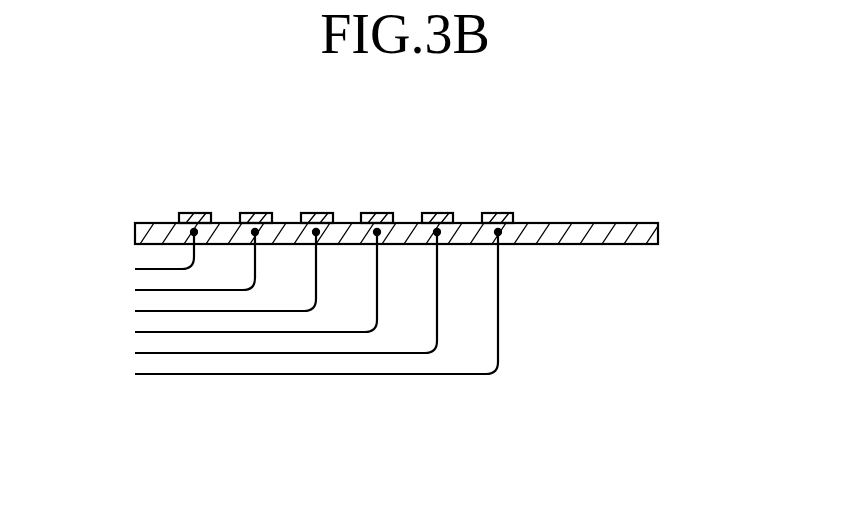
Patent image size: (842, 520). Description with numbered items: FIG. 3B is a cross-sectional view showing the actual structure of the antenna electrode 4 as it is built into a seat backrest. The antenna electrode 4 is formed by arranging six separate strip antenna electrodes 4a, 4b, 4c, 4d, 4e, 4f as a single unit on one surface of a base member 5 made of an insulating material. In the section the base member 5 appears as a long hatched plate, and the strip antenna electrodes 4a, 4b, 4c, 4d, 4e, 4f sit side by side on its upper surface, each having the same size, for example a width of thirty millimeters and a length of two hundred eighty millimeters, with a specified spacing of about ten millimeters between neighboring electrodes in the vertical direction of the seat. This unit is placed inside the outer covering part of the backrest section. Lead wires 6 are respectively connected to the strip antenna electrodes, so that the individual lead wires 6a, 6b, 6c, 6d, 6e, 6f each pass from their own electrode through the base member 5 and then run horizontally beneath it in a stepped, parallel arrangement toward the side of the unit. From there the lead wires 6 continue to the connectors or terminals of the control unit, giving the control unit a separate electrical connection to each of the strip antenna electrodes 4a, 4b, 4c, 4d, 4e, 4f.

The antenna electrode 4 is at (181, 209).
The strip antenna electrode 4a is at (197, 211).
The strip antenna electrode 4b is at (258, 211).
The strip antenna electrode 4c is at (319, 211).
The strip antenna electrode 4d is at (380, 211).
The strip antenna electrode 4e is at (440, 211).
The strip antenna electrode 4f is at (501, 211).
The base member 5 is at (658, 232).
The lead wires 6 is at (130, 324).
The lead wire 6a is at (160, 269).
The lead wire 6b is at (192, 290).
The lead wire 6c is at (252, 311).
The lead wire 6d is at (315, 332).
The lead wire 6e is at (372, 353).
The lead wire 6f is at (445, 374).